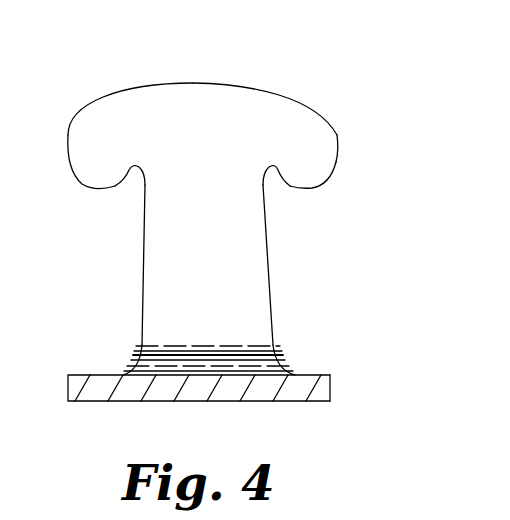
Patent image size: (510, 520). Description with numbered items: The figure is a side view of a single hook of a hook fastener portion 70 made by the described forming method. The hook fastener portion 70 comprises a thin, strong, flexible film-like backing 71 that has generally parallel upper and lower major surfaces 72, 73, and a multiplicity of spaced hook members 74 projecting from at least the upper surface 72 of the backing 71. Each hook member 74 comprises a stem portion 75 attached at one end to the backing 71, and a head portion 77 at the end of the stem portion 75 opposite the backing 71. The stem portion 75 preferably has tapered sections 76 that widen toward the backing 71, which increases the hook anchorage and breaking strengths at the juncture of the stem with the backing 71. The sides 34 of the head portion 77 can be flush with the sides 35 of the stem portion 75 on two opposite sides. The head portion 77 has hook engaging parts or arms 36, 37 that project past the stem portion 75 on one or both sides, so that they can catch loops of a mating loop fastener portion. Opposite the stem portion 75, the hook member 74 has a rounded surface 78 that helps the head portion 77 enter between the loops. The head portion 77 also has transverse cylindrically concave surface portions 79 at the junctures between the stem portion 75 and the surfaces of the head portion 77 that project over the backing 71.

The hook fastener portion 70 is at (357, 58).
The hook member 74 is at (210, 81).
The rounded surface 78 is at (185, 82).
The head portion 77 is at (308, 101).
The sides of the head portion 34 is at (322, 152).
The hook engaging part or arm 36 is at (312, 170).
The hook engaging part or arm 37 is at (93, 185).
The transverse cylindrically concave surface portion 79 is at (135, 171).
The stem portion 75 is at (263, 253).
The sides of the stem portion 35 is at (253, 285).
The tapered section 76 is at (128, 357).
The upper major surface 72 is at (73, 373).
The lower major surface 73 is at (322, 401).
The backing 71 is at (97, 394).